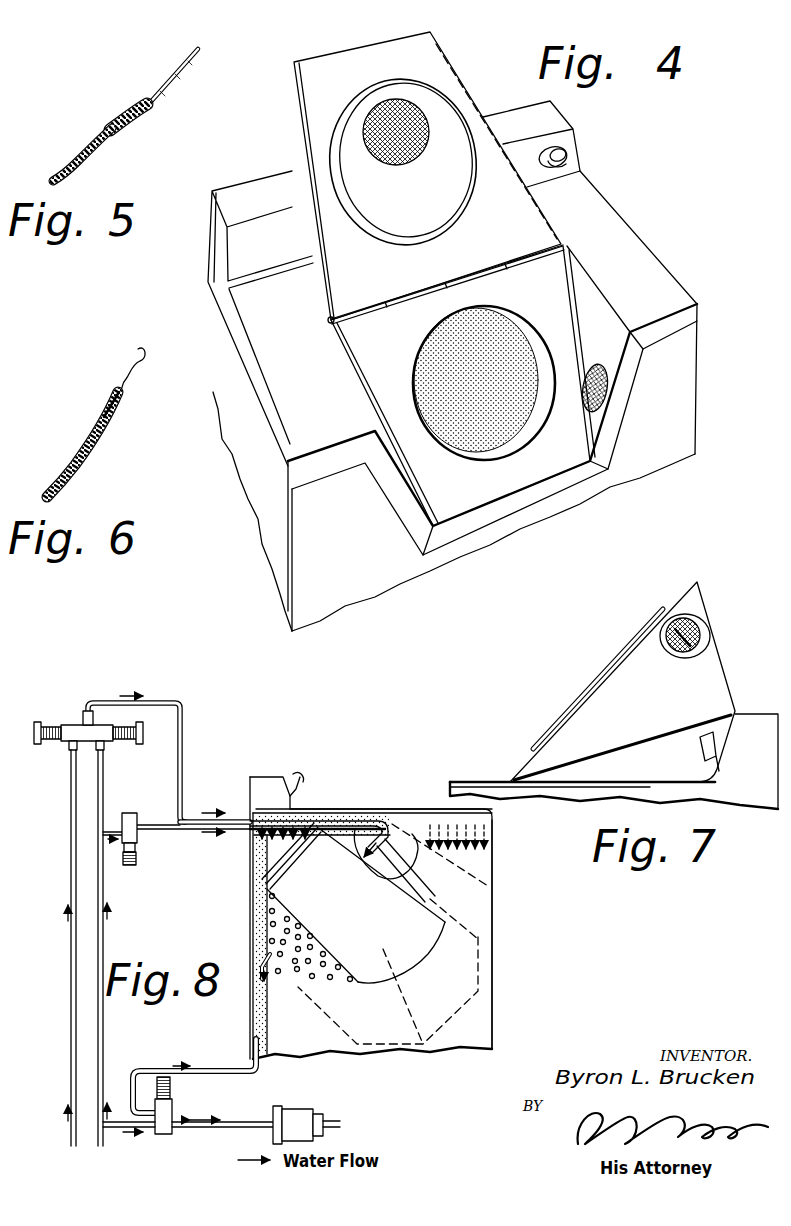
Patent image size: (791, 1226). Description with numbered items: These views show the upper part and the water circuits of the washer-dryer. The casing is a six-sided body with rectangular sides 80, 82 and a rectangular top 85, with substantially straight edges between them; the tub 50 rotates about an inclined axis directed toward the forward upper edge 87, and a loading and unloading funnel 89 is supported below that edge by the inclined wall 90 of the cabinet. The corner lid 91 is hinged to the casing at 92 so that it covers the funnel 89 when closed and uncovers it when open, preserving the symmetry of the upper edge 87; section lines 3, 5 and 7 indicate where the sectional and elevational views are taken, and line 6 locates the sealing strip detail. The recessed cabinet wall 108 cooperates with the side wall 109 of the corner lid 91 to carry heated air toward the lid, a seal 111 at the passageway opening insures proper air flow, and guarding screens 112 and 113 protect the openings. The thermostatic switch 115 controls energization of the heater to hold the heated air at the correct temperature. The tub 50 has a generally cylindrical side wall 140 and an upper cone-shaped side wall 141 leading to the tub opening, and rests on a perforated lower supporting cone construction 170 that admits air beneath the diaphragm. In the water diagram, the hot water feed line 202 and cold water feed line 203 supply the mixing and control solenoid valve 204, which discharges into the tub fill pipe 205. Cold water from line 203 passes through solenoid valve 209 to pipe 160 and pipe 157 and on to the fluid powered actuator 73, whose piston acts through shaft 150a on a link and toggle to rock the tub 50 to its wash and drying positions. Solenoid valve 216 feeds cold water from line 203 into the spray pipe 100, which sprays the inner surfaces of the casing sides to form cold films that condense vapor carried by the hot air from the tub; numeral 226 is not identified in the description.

In FIG. 4, the rectangular side 80 is at (258, 478).
In FIG. 4, the rectangular side 82 is at (640, 473).
In FIG. 4, the rectangular top 85 is at (620, 230).
In FIG. 7, the rectangular top 85 is at (627, 782).
In FIG. 8, the rectangular top 85 is at (393, 810).
In FIG. 4, the forward upper edge 87 is at (325, 452).
In FIG. 8, the forward upper edge 87 is at (492, 815).
In FIG. 4, the loading and unloading funnel 89 is at (490, 458).
In FIG. 4, the inclined wall 90 is at (567, 300).
In FIG. 8, the inclined wall 90 is at (460, 863).
In FIG. 4, the corner lid 91 is at (316, 123).
In FIG. 4, the hinge 92 is at (400, 300).
In FIG. 4, the recessed cabinet wall 108 is at (598, 423).
In FIG. 4, the guarding screen 113 is at (613, 348).
In FIG. 4, the thermostatic switch 115 is at (572, 160).
In FIG. 7, the thermostatic switch 115 is at (700, 748).
In FIG. 6, the side wall of the corner lid 109 is at (121, 397).
In FIG. 7, the side wall of the corner lid 109 is at (600, 712).
In FIG. 6, the seal 111 is at (96, 461).
In FIG. 7, the seal 111 is at (702, 624).
In FIG. 6, the guarding screen 112 is at (118, 361).
In FIG. 7, the guarding screen 112 is at (680, 648).
In FIG. 4, the section line 3- 3 is at (379, 80).
In FIG. 4, the section line 5- 5 is at (443, 258).
In FIG. 4, the section line 7- 7 is at (401, 28).
In FIG. 7, the section line 6- 6 is at (687, 672).
In FIG. 8, the tub 50 is at (258, 890).
In FIG. 8, the lower supporting cone construction 170 is at (258, 921).
In FIG. 8, the cable 226 is at (295, 797).
In FIG. 8, the cold water spray pipe 100 is at (428, 850).
In FIG. 8, the cylindrical side wall 140 is at (372, 912).
In FIG. 8, the upper cone-shaped side wall 141 is at (420, 925).
In FIG. 8, the mixing and control solenoid valve 204 is at (73, 730).
In FIG. 8, the hot water feed line 202 is at (71, 1033).
In FIG. 8, the cold water feed line 203 is at (103, 1055).
In FIG. 8, the tub fill pipe 205 is at (317, 822).
In FIG. 8, the solenoid valve 216 is at (137, 824).
In FIG. 8, the pipe 160 is at (183, 1123).
In FIG. 8, the solenoid valve 209 is at (158, 1135).
In FIG. 8, the pipe 157 is at (245, 1122).
In FIG. 8, the actuator 73 is at (292, 1112).
In FIG. 8, the shaft 150a is at (336, 1125).